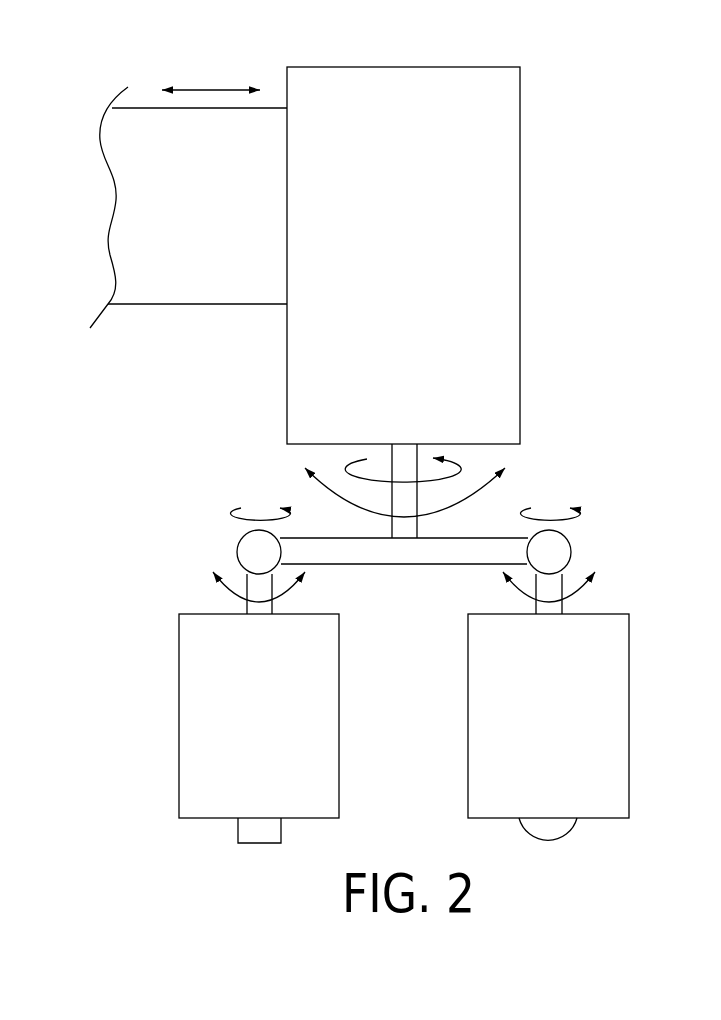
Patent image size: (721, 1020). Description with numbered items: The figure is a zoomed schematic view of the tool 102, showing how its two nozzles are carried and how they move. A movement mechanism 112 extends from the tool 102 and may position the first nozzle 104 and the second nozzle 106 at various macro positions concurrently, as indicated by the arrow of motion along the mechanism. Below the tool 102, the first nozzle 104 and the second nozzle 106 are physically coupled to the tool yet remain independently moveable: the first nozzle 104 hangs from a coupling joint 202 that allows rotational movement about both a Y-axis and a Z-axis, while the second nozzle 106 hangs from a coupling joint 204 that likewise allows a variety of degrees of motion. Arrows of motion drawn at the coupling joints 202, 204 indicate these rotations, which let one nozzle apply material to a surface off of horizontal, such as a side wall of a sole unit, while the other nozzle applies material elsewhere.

The tool 102 is at (405, 63).
The movement mechanism 112 is at (197, 285).
The coupling joint 202 is at (251, 543).
The coupling joint 204 is at (557, 543).
The first nozzle 104 is at (198, 723).
The second nozzle 106 is at (610, 723).